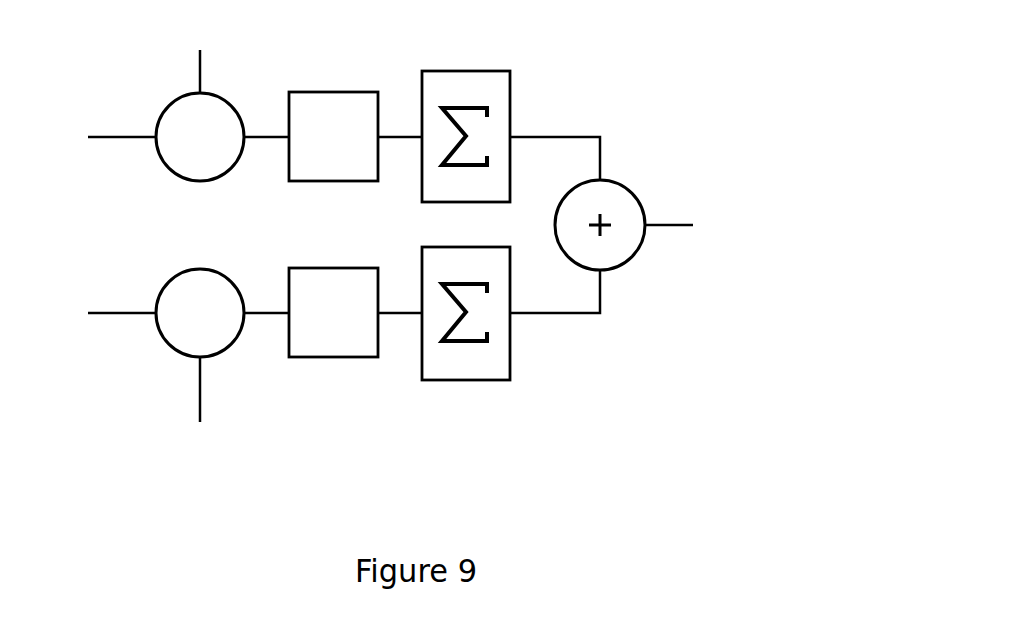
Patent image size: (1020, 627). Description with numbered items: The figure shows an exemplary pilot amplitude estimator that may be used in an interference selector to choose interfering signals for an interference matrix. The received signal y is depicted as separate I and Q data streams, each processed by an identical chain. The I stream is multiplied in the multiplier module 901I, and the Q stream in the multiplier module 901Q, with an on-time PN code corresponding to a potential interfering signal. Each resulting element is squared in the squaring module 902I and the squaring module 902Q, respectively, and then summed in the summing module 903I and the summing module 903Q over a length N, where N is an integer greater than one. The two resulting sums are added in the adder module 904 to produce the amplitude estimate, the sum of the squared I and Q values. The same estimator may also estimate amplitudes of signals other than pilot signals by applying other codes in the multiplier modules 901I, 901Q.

The multiplier module 901I is at (157, 119).
The multiplier module 901Q is at (158, 287).
The squaring module 902I is at (360, 91).
The squaring module 902Q is at (338, 358).
The summing module 903I is at (490, 71).
The summing module 903Q is at (464, 381).
The adder module 904 is at (637, 197).